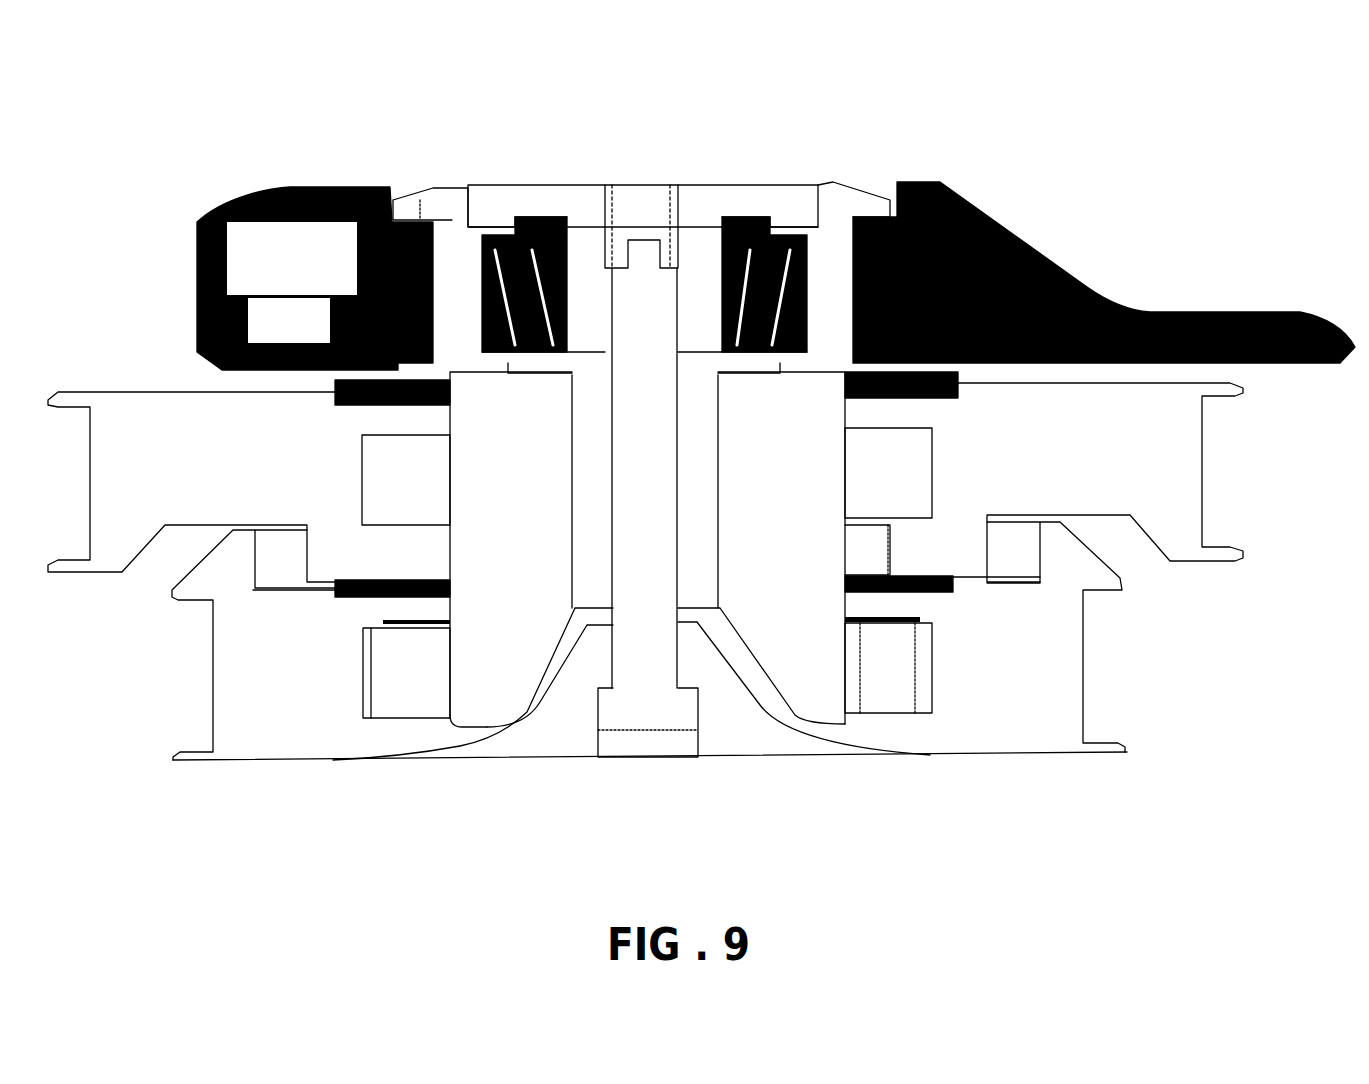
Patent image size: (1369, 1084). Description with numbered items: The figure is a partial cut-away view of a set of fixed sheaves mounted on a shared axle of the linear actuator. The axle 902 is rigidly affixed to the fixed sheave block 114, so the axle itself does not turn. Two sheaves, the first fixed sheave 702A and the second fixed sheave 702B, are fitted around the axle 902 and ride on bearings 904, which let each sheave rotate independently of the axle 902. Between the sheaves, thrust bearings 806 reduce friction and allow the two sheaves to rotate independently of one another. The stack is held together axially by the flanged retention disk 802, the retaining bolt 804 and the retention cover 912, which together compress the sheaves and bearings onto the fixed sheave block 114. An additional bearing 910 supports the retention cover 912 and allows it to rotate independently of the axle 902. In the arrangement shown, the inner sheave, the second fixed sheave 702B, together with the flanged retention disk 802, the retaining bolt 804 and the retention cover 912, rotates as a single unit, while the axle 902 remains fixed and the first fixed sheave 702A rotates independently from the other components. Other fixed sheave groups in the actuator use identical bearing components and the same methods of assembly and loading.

The fixed sheave block 114 is at (312, 338).
The retention cover 912 is at (500, 187).
The bearing 910 is at (750, 250).
The axle 902 is at (462, 503).
The bearings 904 is at (852, 658).
The thrust bearings 806 is at (900, 387).
The fixed sheave 1 702A is at (1122, 467).
The fixed sheave 2 702B is at (1067, 702).
The retaining bolt 804 is at (635, 722).
The flanged retention disk 802 is at (747, 743).